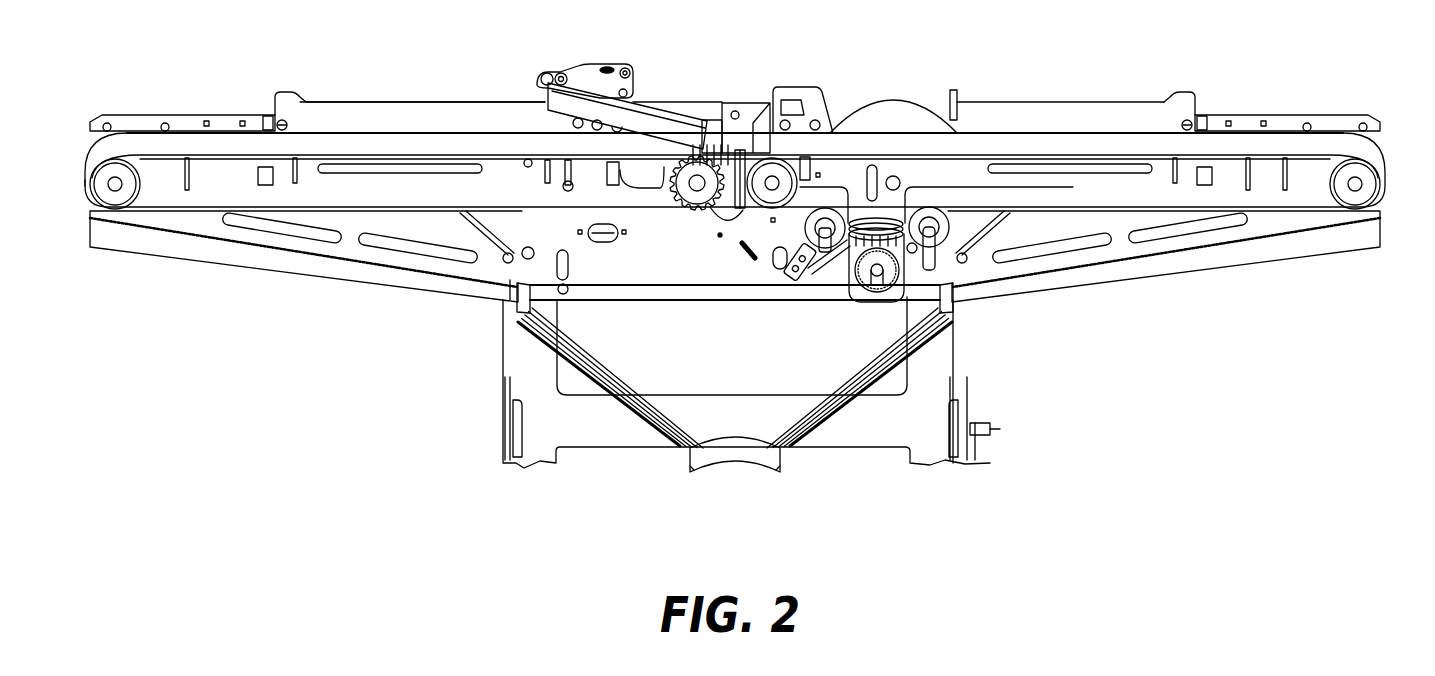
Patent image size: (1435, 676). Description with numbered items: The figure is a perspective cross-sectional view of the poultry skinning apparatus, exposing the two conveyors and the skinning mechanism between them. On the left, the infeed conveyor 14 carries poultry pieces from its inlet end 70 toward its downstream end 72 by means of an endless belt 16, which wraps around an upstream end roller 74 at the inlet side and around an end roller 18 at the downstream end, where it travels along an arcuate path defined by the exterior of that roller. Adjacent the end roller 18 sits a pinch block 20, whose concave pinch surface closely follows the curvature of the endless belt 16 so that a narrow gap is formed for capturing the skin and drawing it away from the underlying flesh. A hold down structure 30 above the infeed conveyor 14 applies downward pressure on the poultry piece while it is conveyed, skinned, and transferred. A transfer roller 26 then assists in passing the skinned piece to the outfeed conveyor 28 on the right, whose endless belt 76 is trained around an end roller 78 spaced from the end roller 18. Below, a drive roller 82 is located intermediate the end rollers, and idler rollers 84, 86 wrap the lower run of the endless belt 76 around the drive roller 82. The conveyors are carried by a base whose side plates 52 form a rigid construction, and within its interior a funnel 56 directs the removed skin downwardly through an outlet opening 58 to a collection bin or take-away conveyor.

The infeed conveyor 14 is at (77, 170).
The endless belt 16 is at (126, 133).
The end roller 18 is at (690, 196).
The pinch block 20 is at (1358, 184).
The transfer roller 26 is at (740, 150).
The outfeed conveyor 28 is at (1341, 112).
The hold down structure 30 is at (538, 107).
The side plates 52 is at (573, 418).
The funnel 56 is at (750, 387).
The outlet opening 58 is at (745, 463).
The inlet end 70 is at (146, 103).
The downstream end 72 is at (1293, 107).
The upstream end roller 74 is at (117, 210).
The endless belt 76 is at (1245, 148).
The end roller 78 is at (777, 200).
The drive roller 82 is at (881, 287).
The idler roller 84 is at (827, 240).
The idler roller 86 is at (937, 240).